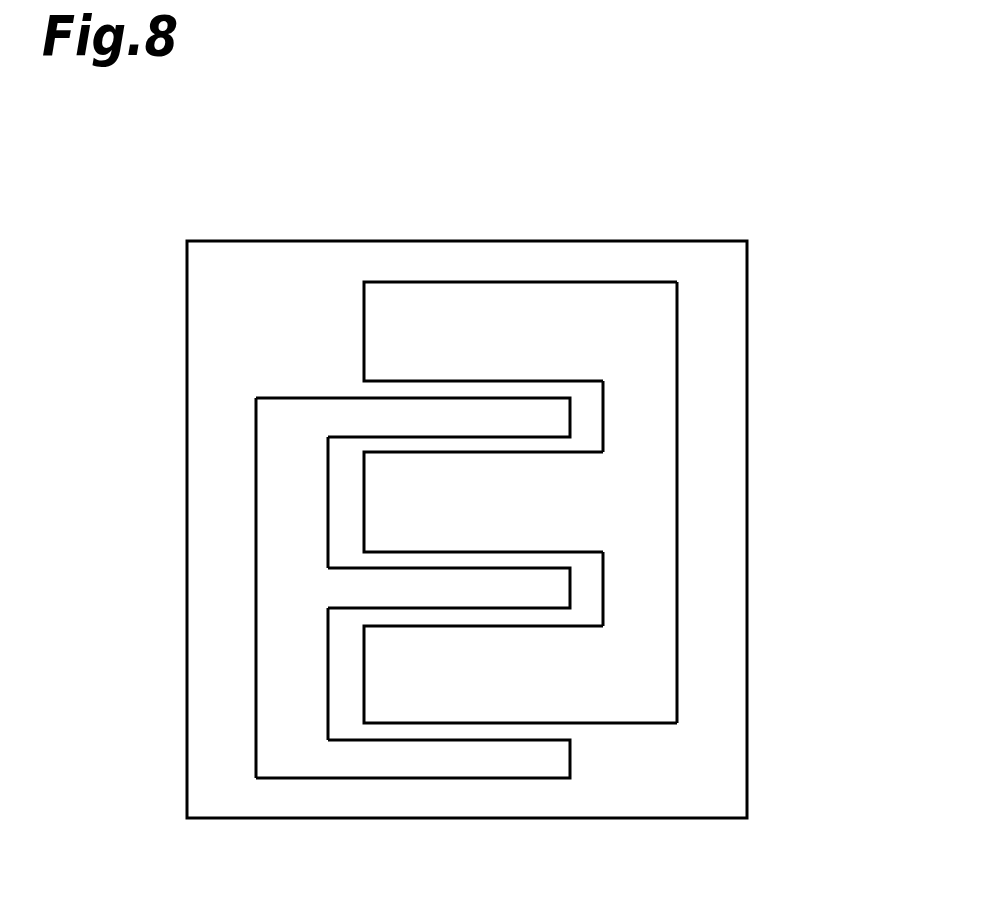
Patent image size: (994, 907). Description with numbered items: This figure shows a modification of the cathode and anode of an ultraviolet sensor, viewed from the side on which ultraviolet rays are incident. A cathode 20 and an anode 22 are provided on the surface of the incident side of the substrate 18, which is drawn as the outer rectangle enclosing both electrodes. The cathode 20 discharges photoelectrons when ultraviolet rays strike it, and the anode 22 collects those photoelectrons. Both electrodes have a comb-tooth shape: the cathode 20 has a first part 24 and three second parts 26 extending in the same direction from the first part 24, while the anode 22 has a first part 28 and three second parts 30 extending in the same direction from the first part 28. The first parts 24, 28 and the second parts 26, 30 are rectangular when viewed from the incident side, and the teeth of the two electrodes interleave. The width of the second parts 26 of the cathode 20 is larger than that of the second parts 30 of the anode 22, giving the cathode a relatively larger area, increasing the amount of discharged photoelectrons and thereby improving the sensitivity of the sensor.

The substrate 18 is at (748, 478).
The cathode 20 is at (603, 533).
The anode 22 is at (328, 527).
The first part 24 is at (660, 400).
The second parts 26 is at (535, 308).
The first part 28 is at (272, 493).
The second parts 30 is at (497, 587).